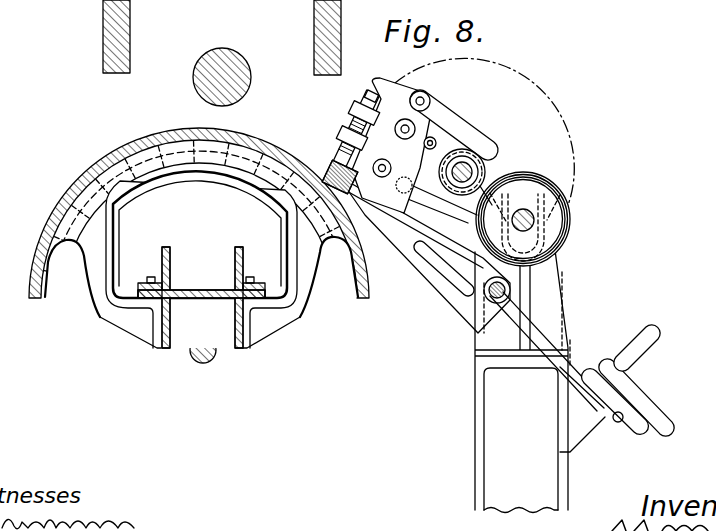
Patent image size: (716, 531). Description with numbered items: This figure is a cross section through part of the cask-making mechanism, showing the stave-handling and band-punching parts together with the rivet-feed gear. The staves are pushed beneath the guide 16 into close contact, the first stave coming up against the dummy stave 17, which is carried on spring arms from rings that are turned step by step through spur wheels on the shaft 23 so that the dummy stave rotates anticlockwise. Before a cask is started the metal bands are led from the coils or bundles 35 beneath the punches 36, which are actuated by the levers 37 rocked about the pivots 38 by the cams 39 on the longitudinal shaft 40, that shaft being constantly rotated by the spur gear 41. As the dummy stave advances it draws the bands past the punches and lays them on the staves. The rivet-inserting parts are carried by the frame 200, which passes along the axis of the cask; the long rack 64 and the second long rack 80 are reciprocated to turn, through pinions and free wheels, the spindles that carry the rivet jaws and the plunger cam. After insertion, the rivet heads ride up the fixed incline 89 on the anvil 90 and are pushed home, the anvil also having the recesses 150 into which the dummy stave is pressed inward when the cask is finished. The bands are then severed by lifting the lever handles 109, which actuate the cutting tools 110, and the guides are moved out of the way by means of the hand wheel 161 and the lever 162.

The guide 16 is at (403, 262).
The dummy stave 17 is at (320, 305).
The shaft 23 is at (226, 50).
The coils or bundles 35 is at (571, 214).
The punches 36 is at (339, 162).
The levers 37 is at (457, 127).
The pivots 38 is at (426, 95).
The cams 39 is at (478, 150).
The longitudinal shaft 40 is at (471, 169).
The spur gear 41 is at (571, 143).
The long rack 64 is at (150, 279).
The second long rack 80 is at (254, 280).
The fixed incline 89 is at (187, 128).
The anvil 90 is at (145, 178).
The lever handles 109 is at (420, 200).
The cutting tools 110 is at (418, 179).
The recesses 150 is at (107, 160).
The hand wheel 161 is at (623, 380).
The lever 162 is at (552, 336).
The frame 200 is at (200, 289).